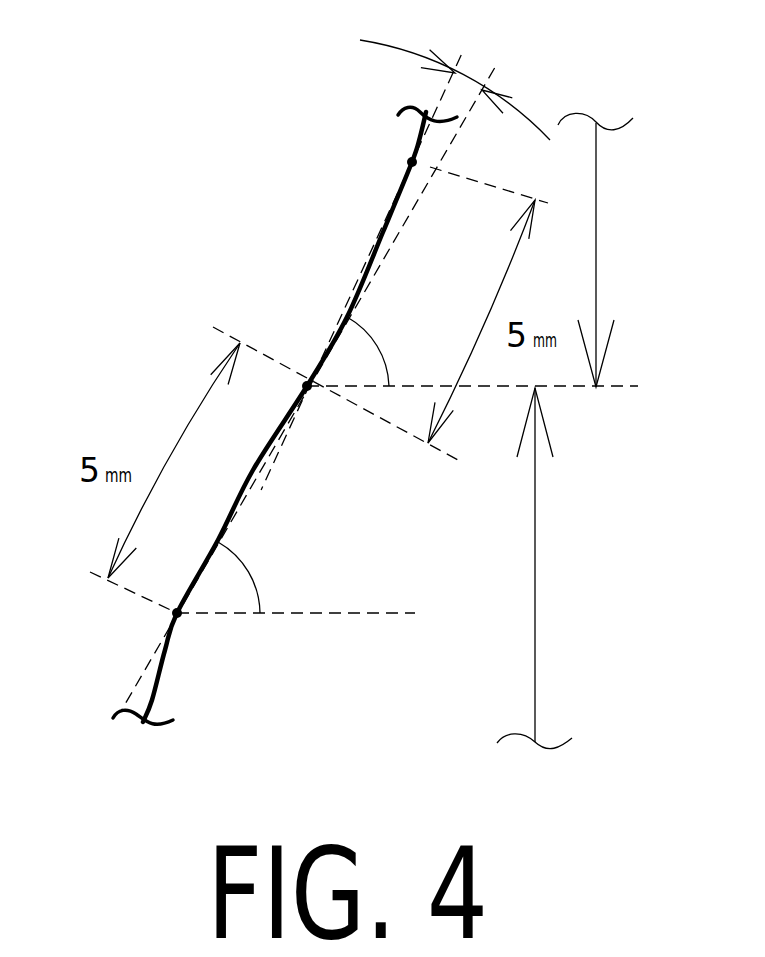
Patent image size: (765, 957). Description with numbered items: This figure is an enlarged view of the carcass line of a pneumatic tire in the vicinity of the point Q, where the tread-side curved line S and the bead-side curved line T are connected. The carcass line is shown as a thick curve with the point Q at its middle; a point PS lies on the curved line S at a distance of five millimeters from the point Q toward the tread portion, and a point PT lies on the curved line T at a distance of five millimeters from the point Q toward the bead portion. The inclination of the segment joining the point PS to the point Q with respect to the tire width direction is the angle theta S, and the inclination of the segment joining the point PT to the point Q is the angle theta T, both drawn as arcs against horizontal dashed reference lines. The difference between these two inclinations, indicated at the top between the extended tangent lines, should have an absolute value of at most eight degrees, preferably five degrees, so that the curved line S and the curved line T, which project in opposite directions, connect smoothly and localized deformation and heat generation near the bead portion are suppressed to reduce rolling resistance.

The point PS is at (410, 160).
The point PT is at (175, 613).
The point Q is at (307, 395).
The curved line S is at (595, 250).
The curved line T is at (538, 568).